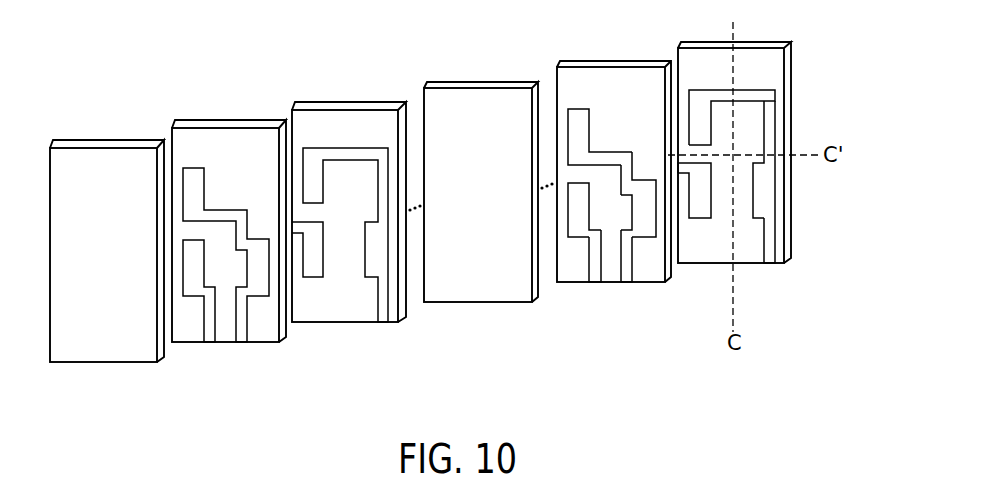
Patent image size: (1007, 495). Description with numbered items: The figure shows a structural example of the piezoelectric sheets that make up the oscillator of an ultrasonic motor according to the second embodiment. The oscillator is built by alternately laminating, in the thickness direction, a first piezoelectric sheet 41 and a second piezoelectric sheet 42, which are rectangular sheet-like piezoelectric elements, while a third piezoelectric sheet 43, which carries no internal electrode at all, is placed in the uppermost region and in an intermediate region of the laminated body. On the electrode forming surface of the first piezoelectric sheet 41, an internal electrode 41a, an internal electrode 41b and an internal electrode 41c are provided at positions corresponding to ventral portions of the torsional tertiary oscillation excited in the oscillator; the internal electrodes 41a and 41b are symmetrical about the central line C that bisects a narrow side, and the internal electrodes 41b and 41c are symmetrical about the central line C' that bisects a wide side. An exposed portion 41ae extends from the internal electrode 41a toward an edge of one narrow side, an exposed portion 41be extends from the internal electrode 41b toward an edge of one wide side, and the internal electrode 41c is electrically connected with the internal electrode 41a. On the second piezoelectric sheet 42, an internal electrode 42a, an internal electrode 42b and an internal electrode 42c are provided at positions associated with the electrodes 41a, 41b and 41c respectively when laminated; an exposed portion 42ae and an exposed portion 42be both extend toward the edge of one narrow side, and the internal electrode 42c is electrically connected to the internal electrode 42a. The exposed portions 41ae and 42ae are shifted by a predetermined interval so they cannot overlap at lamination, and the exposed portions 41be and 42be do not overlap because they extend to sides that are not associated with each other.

The first piezoelectric sheet 41 is at (355, 332).
The internal electrode 41a is at (760, 190).
The exposed portion 41ae is at (770, 244).
The internal electrode 41b is at (703, 200).
The exposed portion 41be is at (685, 168).
The internal electrode 41c is at (700, 120).
The second piezoelectric sheet 42 is at (226, 352).
The internal electrode 42a is at (645, 195).
The exposed portion 42ae is at (627, 262).
The internal electrode 42b is at (573, 222).
The exposed portion 42be is at (596, 273).
The internal electrode 42c is at (578, 130).
The third piezoelectric sheet 43 is at (123, 372).